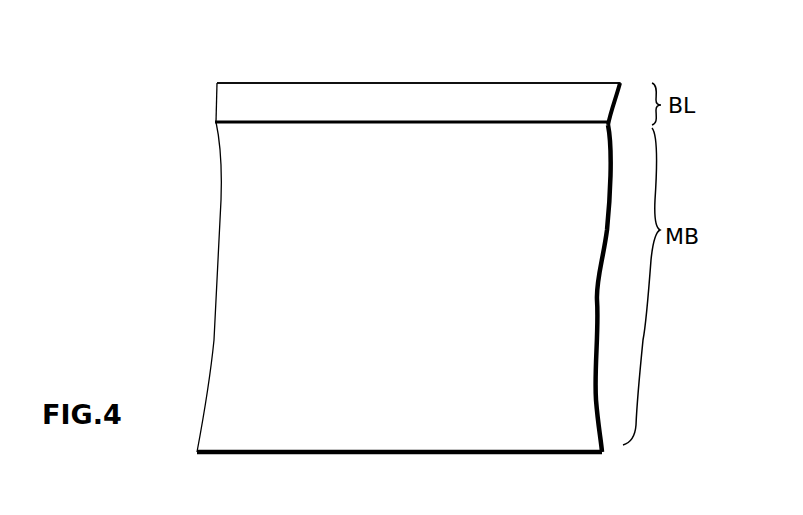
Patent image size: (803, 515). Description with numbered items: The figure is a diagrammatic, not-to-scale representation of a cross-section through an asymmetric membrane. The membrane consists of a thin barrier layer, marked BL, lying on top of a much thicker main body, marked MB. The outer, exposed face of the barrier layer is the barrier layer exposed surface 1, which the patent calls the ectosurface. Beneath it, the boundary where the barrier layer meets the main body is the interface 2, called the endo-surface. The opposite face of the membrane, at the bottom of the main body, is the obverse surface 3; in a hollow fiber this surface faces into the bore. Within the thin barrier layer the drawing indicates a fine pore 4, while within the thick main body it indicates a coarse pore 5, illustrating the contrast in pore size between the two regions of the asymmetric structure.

The barrier layer exposed surface 1 is at (258, 84).
The interface of the barrier layer with the main body 2 is at (254, 124).
The obverse surface of the membrane 3 is at (567, 455).
The fine pore of the barrier layer 4 is at (567, 123).
The coarse pore of the main body 5 is at (285, 328).